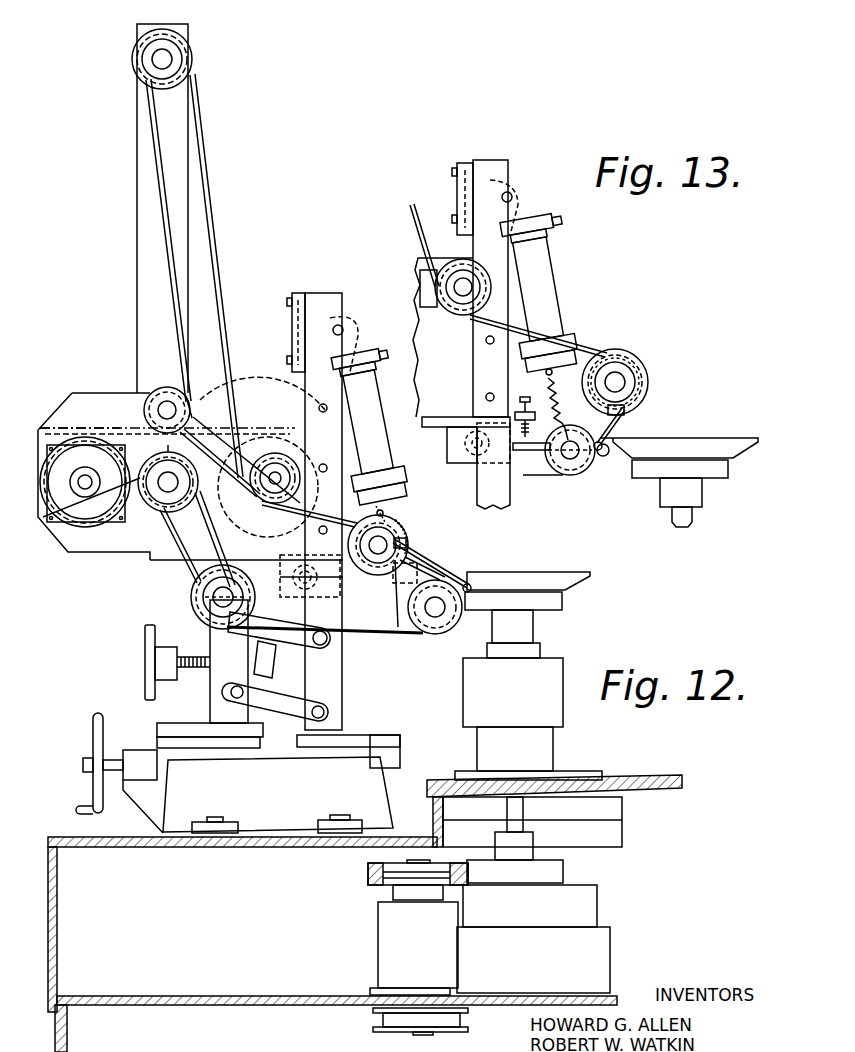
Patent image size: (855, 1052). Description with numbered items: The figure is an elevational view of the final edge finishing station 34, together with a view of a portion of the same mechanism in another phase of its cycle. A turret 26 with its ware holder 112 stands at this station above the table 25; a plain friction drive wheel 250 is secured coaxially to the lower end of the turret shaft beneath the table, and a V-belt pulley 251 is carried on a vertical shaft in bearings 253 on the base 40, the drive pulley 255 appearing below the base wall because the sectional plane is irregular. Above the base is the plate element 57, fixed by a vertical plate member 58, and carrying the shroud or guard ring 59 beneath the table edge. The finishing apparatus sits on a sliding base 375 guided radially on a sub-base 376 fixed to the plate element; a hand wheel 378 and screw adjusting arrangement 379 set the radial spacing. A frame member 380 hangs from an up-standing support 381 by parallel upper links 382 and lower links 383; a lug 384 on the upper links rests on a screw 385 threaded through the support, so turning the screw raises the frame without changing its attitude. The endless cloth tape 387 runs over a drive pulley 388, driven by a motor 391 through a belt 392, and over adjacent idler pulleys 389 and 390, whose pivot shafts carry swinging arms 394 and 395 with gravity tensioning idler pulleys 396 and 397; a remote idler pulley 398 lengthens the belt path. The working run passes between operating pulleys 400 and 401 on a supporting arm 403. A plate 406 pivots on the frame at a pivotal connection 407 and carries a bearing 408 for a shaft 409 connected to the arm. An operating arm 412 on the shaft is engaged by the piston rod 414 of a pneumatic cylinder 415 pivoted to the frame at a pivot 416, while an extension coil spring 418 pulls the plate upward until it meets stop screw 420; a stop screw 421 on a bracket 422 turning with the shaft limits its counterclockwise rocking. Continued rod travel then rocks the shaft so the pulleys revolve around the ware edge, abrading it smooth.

In FIG. 12, the table 25 is at (655, 778).
In FIG. 12, the turret 26 is at (563, 720).
In FIG. 13, the turret 26 is at (683, 527).
In FIG. 12, the edge finishing station 34 is at (567, 646).
In FIG. 13, the edge finishing station 34 is at (737, 428).
In FIG. 12, the base 40 is at (207, 996).
In FIG. 12, the plate or table element 57 is at (97, 848).
In FIG. 12, the vertical plate member 58 is at (57, 963).
In FIG. 12, the shroud or guard ring 59 is at (433, 815).
In FIG. 12, the holder 112 is at (563, 600).
In FIG. 13, the holder 112 is at (720, 478).
In FIG. 12, the friction drive wheel 250 is at (565, 870).
In FIG. 12, the V-belt pulley 251 is at (370, 861).
In FIG. 12, the bearings 253 is at (378, 962).
In FIG. 12, the drive pulley 255 is at (373, 1028).
In FIG. 12, the sliding base 375 is at (371, 745).
In FIG. 12, the sub-base 376 is at (292, 806).
In FIG. 12, the hand wheel 378 is at (94, 728).
In FIG. 12, the screw type adjusting arrangement 379 is at (147, 741).
In FIG. 12, the frame member 380 is at (137, 250).
In FIG. 12, the up-standing support 381 is at (193, 618).
In FIG. 12, the upper links 382 is at (330, 650).
In FIG. 12, the lower links 383 is at (323, 700).
In FIG. 12, the lug 384 is at (266, 678).
In FIG. 12, the screw 385 is at (145, 666).
In FIG. 12, the endless belt or tape 387 is at (218, 253).
In FIG. 13, the endless belt or tape 387 is at (582, 353).
In FIG. 12, the drive pulley 388 is at (58, 447).
In FIG. 12, the idler pulley 389 is at (142, 402).
In FIG. 12, the idler pulley 390 is at (135, 505).
In FIG. 12, the driving motor 391 is at (252, 388).
In FIG. 12, the belt 392 is at (95, 420).
In FIG. 12, the swinging arm 394 is at (206, 400).
In FIG. 12, the swinging arm 395 is at (158, 517).
In FIG. 12, the idler pulley 396 is at (281, 452).
In FIG. 13, the idler pulley 396 is at (436, 278).
In FIG. 12, the idler pulley 397 is at (228, 548).
In FIG. 12, the idler pulley 398 is at (132, 63).
In FIG. 12, the operating pulley 400 is at (395, 577).
In FIG. 13, the operating pulley 400 is at (647, 368).
In FIG. 12, the operating pulley 401 is at (459, 617).
In FIG. 13, the operating pulley 401 is at (570, 480).
In FIG. 12, the supporting arm 403 is at (398, 600).
In FIG. 13, the supporting arm 403 is at (620, 372).
In FIG. 12, the plate 406 is at (321, 582).
In FIG. 13, the plate 406 is at (523, 452).
In FIG. 12, the pivotal connection 407 is at (304, 565).
In FIG. 13, the pivotal connection 407 is at (474, 452).
In FIG. 13, the bearing 408 is at (608, 462).
In FIG. 12, the shaft 409 is at (470, 572).
In FIG. 13, the shaft 409 is at (598, 467).
In FIG. 12, the operating arm 412 is at (467, 557).
In FIG. 12, the piston rod 414 is at (398, 643).
In FIG. 13, the piston rod 414 is at (535, 381).
In FIG. 12, the pneumatic operating cylinder 415 is at (390, 436).
In FIG. 13, the pneumatic operating cylinder 415 is at (546, 271).
In FIG. 12, the pivot 416 is at (345, 330).
In FIG. 13, the pivot 416 is at (514, 196).
In FIG. 13, the extension coil spring 418 is at (572, 370).
In FIG. 12, the stop screw 420 is at (378, 512).
In FIG. 13, the stop screw 420 is at (517, 408).
In FIG. 12, the stop screw 421 is at (413, 537).
In FIG. 13, the stop screw 421 is at (633, 413).
In FIG. 12, the bracket 422 is at (416, 553).
In FIG. 13, the bracket 422 is at (632, 428).